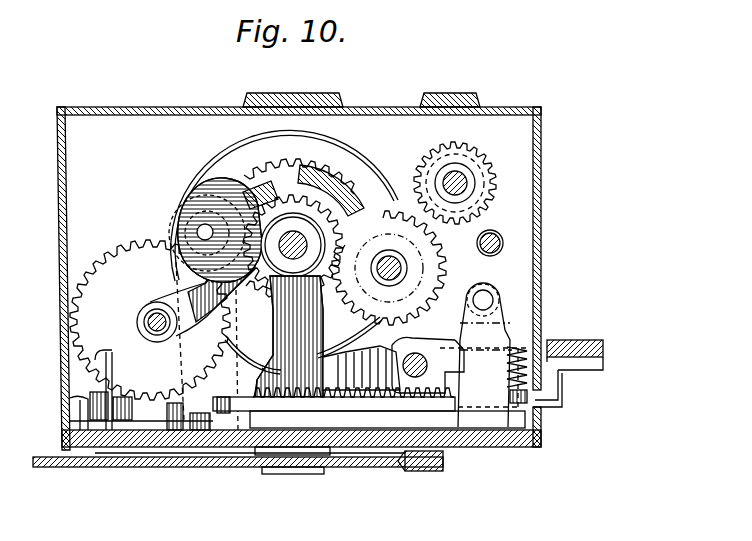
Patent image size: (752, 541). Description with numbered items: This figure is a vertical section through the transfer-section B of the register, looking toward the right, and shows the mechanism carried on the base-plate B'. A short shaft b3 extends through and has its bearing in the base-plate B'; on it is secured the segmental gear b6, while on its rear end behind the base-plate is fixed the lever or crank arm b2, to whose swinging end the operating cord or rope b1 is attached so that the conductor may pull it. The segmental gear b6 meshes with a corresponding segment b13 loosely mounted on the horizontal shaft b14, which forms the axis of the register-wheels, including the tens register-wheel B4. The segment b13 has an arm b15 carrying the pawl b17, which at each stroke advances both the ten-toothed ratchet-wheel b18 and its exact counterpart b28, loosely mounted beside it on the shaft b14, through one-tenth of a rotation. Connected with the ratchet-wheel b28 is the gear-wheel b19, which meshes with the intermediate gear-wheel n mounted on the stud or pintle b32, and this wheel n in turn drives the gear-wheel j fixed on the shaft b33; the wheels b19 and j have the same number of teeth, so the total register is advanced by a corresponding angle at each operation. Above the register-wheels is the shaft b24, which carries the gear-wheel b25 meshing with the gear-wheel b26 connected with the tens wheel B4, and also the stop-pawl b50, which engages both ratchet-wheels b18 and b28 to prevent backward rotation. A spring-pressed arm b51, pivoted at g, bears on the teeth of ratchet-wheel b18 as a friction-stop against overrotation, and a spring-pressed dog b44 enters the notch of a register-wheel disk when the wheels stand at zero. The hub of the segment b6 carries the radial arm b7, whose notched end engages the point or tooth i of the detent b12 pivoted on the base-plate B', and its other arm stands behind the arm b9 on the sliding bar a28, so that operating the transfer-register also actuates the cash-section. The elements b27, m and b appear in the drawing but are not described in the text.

The transfer-section B is at (284, 271).
The base-plate B' is at (269, 464).
The tens register-wheel B4 is at (228, 158).
The gear-wheel b25 is at (150, 318).
The gear b27 is at (264, 315).
The stop-pawl b50 is at (202, 330).
The shaft b24 is at (146, 322).
The pawl-carrying arm b15 is at (202, 195).
The pawl b17 is at (256, 185).
The ratchet-wheel b28 is at (292, 188).
The gear-wheel b19 is at (333, 195).
The horizontal shaft b14 is at (293, 245).
The segment b13 is at (372, 357).
The gear-wheel b26 is at (272, 322).
The ratchet-wheel b18 is at (270, 368).
The intermediate gear-wheel n is at (389, 268).
The stud or pintle b32 is at (400, 261).
The gear-wheel j is at (455, 183).
The shaft b33 is at (462, 178).
The stud m is at (498, 234).
The spring-pressed arm b51 is at (468, 299).
The pivot g is at (477, 304).
The lever b is at (428, 363).
The spring-pressed dog b44 is at (428, 366).
The segmental gear b6 is at (369, 409).
The point or tooth i is at (223, 393).
The radial arm b7 is at (232, 410).
The detent b12 is at (172, 432).
The cord or rope b1 is at (231, 468).
The short shaft b3 is at (283, 475).
The lever or crank arm b2 is at (445, 458).
The sliding bar a28 is at (575, 344).
The arm b9 is at (548, 402).